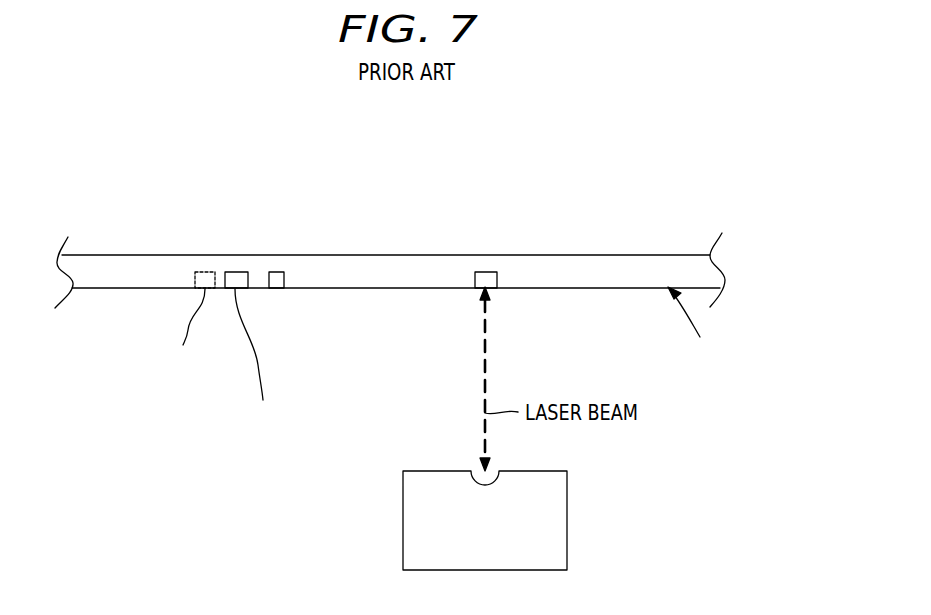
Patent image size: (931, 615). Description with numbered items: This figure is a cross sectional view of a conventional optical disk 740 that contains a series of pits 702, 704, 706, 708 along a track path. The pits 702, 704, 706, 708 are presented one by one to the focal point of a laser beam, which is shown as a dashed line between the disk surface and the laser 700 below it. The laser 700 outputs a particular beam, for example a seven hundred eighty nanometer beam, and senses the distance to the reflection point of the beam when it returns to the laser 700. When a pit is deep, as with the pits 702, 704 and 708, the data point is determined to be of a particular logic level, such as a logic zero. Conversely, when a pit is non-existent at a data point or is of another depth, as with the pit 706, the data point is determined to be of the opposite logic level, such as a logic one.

The laser 700 is at (567, 520).
The pit 702 is at (240, 272).
The pit 704 is at (275, 272).
The pit 706 is at (203, 272).
The pit 708 is at (485, 272).
The optical disk 740 is at (642, 270).